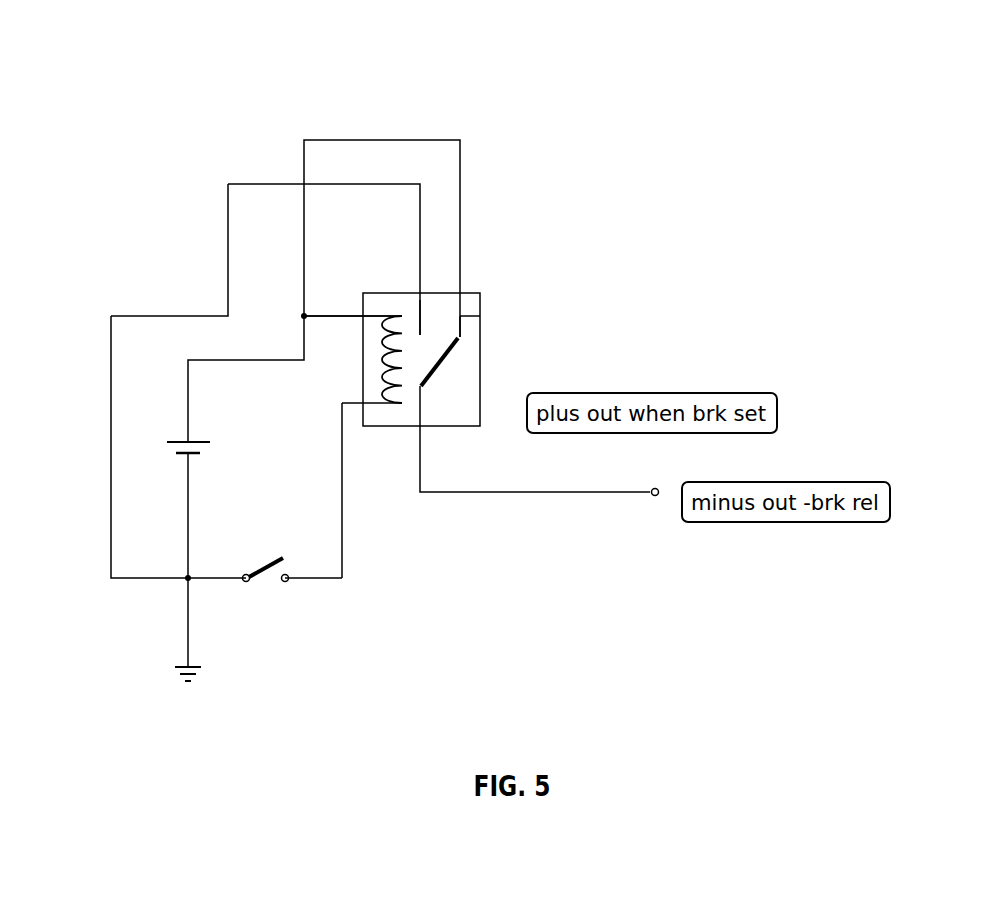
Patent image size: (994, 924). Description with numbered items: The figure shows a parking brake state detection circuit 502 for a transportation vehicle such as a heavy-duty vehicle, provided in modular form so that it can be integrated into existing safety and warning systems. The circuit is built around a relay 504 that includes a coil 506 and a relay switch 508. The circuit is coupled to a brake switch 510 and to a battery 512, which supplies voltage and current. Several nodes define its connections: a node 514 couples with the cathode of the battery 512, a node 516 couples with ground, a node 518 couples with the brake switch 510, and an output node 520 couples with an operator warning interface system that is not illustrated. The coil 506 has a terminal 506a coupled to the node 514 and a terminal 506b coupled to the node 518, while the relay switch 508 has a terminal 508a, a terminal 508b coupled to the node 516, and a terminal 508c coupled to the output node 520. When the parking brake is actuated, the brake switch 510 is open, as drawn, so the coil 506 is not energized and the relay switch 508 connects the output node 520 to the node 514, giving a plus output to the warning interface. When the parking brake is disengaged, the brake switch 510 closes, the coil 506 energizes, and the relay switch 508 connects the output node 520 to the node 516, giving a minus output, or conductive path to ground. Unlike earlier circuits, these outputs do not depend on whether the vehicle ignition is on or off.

The parking brake state detection circuit 502 is at (196, 120).
The relay 504 is at (480, 364).
The coil 506 is at (387, 373).
The terminal 506a is at (305, 314).
The terminal 506b is at (353, 402).
The relay switch 508 is at (433, 372).
The terminal 508a is at (483, 316).
The terminal 508b is at (418, 316).
The terminal 508c is at (420, 407).
The brake switch 510 is at (285, 557).
The battery 512 is at (172, 441).
The node 514 is at (380, 140).
The node 516 is at (361, 184).
The node 518 is at (343, 522).
The output node 520 is at (648, 494).